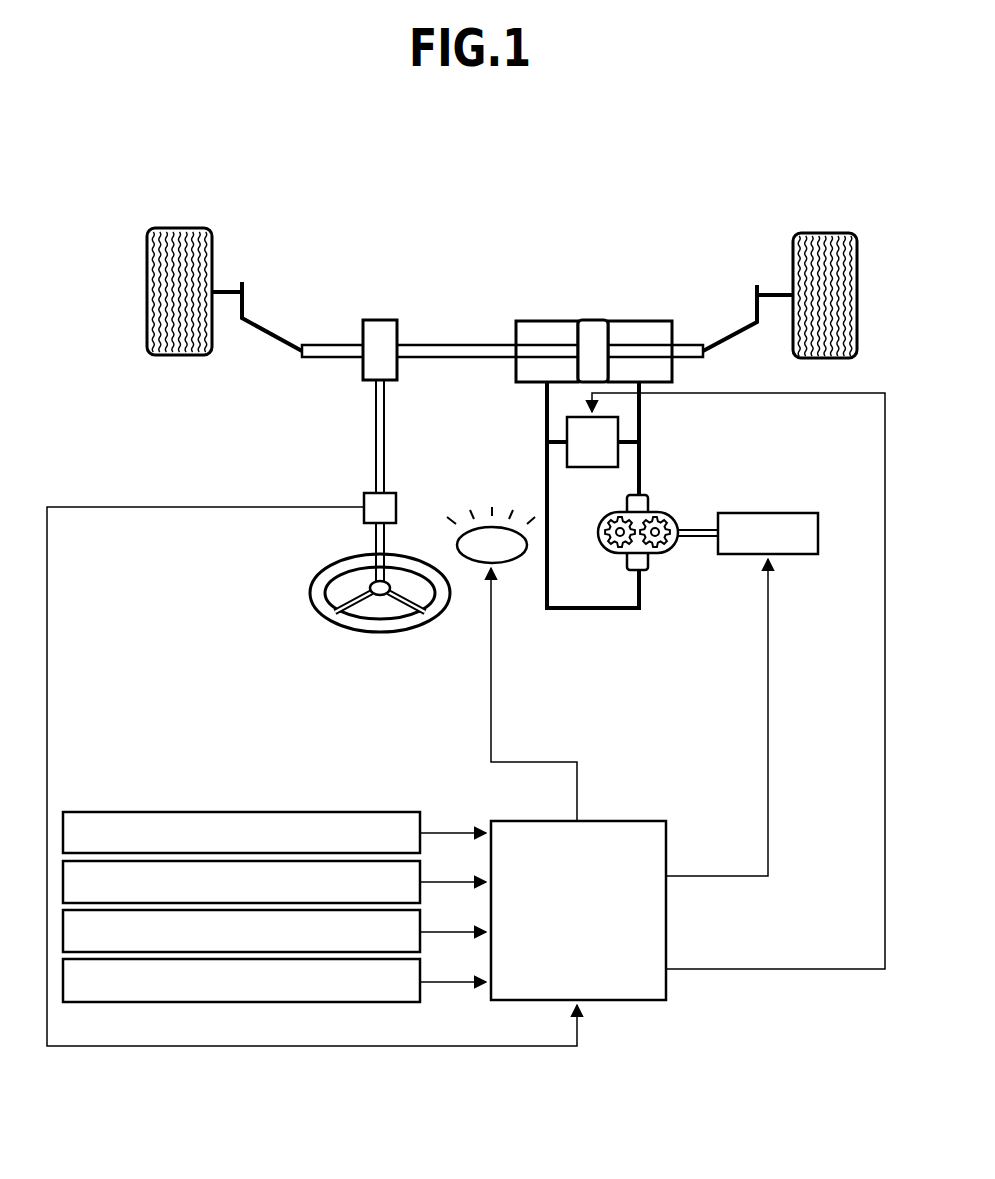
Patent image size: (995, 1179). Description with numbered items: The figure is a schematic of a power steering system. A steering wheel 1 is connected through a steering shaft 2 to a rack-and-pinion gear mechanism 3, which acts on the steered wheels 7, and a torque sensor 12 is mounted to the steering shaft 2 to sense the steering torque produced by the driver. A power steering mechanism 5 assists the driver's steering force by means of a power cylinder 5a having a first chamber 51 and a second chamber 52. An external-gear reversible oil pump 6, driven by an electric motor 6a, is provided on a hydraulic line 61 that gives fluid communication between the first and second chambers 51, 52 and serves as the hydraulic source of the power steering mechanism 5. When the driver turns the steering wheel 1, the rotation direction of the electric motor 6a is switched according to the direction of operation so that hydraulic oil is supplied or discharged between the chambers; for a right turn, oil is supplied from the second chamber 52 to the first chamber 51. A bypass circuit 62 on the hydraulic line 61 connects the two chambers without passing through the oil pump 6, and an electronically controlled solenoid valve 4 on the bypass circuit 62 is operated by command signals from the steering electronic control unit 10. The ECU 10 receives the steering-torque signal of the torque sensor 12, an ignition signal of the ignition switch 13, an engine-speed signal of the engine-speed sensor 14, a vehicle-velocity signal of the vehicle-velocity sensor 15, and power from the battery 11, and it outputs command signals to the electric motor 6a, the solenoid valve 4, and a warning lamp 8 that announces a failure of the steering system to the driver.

The steering wheel 1 is at (312, 602).
The steering shaft 2 is at (376, 537).
The rack-and-pinion gear mechanism 3 is at (378, 320).
The solenoid valve 4 is at (592, 468).
The power steering mechanism 5 is at (624, 308).
The power cylinder 5a is at (640, 320).
The first chamber 51 is at (652, 333).
The second chamber 52 is at (545, 328).
The oil pump 6 is at (664, 498).
The electric motor 6a is at (798, 513).
The steered wheels 7 is at (823, 233).
The warning lamp 8 is at (500, 563).
The steering electronic control unit 10 is at (632, 821).
The battery 11 is at (420, 822).
The torque sensor 12 is at (396, 507).
The ignition switch 13 is at (420, 871).
The engine-speed sensor 14 is at (420, 921).
The vehicle-velocity sensor 15 is at (420, 971).
The hydraulic line 61 is at (545, 405).
The bypass circuit 62 is at (557, 447).